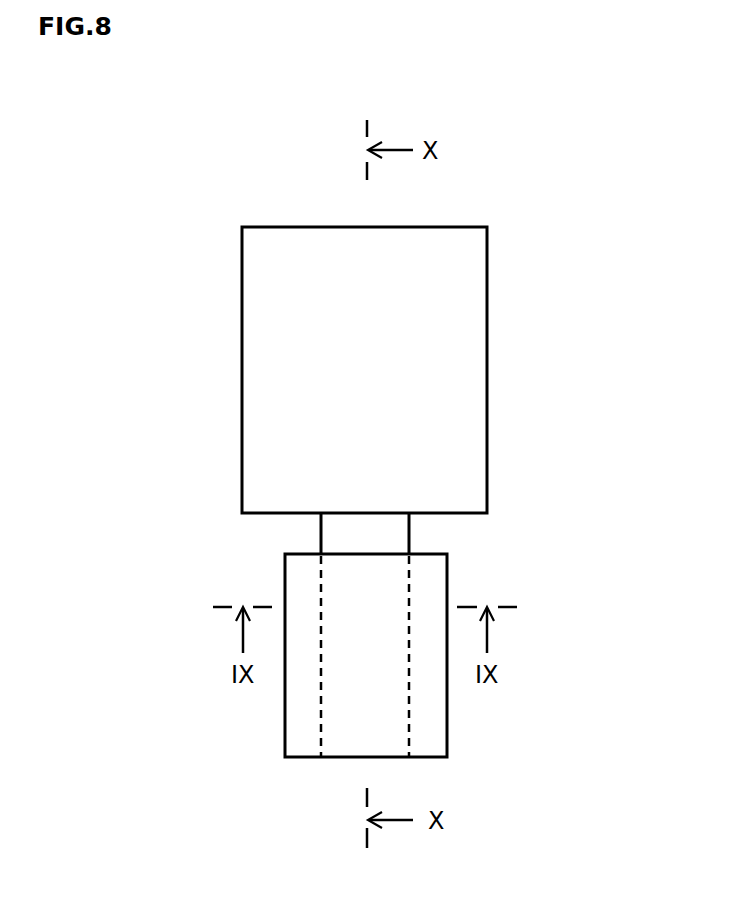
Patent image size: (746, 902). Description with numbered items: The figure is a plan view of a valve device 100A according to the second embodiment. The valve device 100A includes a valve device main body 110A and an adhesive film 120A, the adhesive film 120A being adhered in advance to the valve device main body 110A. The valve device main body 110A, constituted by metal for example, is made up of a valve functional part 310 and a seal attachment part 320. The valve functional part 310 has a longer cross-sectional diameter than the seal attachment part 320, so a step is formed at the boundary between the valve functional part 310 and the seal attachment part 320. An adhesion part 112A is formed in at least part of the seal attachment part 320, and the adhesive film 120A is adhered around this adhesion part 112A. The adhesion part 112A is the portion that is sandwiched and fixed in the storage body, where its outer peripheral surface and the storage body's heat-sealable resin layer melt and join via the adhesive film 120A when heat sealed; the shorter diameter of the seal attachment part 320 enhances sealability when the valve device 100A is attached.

The valve device 100A is at (462, 564).
The valve device main body 110A is at (483, 492).
The valve functional part 310 is at (487, 340).
The seal attachment part 320 is at (409, 539).
The adhesion part 112A is at (464, 675).
The adhesive film 120A is at (525, 552).